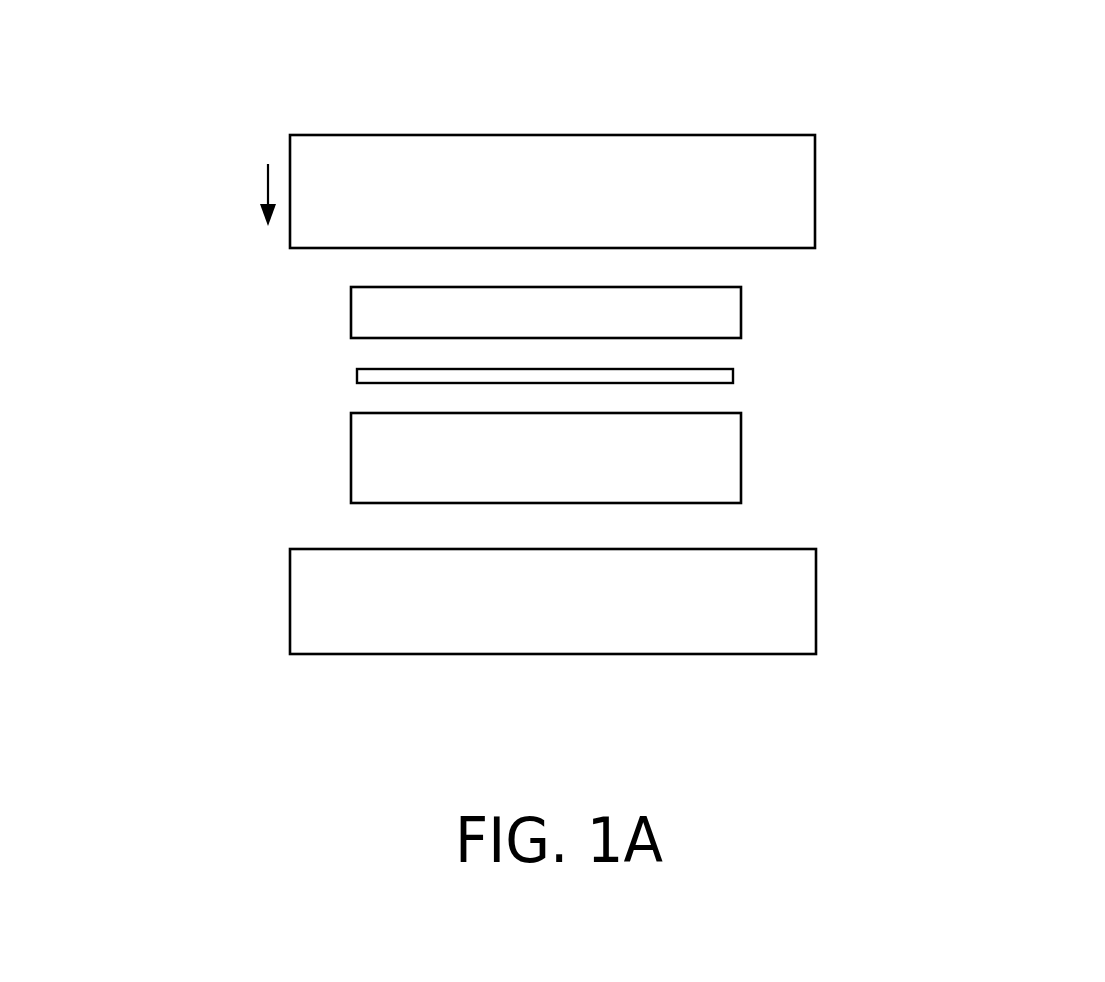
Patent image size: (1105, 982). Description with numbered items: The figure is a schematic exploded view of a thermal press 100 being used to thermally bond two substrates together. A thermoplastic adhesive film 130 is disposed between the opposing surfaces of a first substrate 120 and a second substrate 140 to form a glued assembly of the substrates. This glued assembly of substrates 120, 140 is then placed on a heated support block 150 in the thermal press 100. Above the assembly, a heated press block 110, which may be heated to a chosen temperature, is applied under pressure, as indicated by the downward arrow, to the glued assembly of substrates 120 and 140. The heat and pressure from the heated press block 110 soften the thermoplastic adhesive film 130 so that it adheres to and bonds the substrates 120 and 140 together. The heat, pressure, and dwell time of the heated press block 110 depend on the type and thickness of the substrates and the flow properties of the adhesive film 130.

The thermal press 100 is at (581, 48).
The heated press block 110 is at (815, 217).
The substrate 120 is at (741, 333).
The thermoplastic adhesive film 130 is at (733, 380).
The substrate 140 is at (741, 500).
The heated support block 150 is at (816, 613).